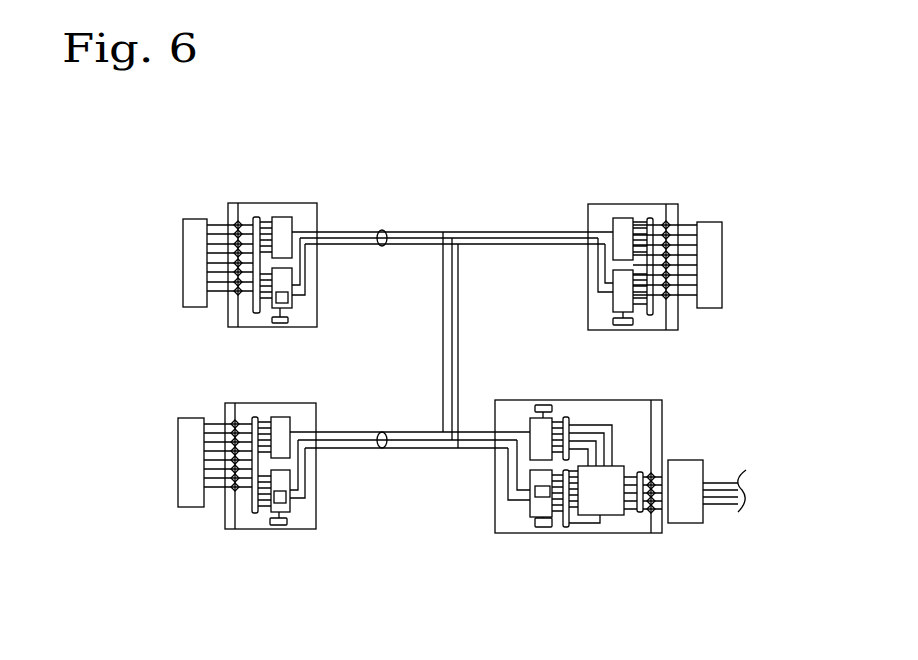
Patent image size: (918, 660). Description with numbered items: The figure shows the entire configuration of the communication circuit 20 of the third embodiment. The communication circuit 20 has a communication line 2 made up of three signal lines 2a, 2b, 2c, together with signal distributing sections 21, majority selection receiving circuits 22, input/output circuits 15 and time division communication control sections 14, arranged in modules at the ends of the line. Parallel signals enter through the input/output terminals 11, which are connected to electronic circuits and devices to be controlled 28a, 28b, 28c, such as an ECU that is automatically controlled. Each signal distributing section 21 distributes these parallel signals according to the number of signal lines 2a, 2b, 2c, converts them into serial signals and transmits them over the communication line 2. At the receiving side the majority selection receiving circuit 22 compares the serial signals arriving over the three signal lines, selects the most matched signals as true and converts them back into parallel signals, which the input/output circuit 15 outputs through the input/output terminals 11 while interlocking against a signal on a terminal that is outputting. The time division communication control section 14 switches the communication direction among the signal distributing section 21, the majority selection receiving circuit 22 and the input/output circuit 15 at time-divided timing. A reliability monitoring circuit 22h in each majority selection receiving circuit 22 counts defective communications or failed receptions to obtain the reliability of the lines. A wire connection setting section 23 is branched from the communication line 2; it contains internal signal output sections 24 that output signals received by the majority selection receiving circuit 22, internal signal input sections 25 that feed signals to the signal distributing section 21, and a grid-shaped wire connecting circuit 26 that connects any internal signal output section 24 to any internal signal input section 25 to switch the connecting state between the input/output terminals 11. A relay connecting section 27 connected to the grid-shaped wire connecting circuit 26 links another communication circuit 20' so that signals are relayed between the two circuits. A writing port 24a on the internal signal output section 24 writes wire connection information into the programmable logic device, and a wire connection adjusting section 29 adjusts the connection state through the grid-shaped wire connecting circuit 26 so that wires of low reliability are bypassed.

The communication line 2 is at (384, 230).
The signal line 2a is at (505, 231).
The signal line 2b is at (515, 238).
The signal line 2c is at (525, 245).
The input/output terminal 11 is at (232, 220).
The time division communication control section 14 is at (283, 325).
The input/output circuit 15 is at (257, 217).
The communication circuit 20 is at (463, 280).
The another communication circuit 20' is at (729, 513).
The signal distributing section 21 is at (285, 218).
The majority selection receiving circuit 22 is at (292, 320).
The reliability monitoring circuit 22h is at (292, 300).
The wire connection setting section 23 is at (497, 400).
The internal signal output section 24 is at (566, 528).
The writing port 24a is at (575, 523).
The internal signal input section 25 is at (567, 417).
The grid-shaped wire connecting circuit 26 is at (622, 466).
The relay connecting section 27 is at (640, 472).
The electronic circuit or device to be controlled 28a is at (185, 218).
The electronic circuit or device to be controlled 28b is at (185, 418).
The electronic circuit or device to be controlled 28c is at (722, 222).
The wire connection adjusting section 29 is at (540, 528).